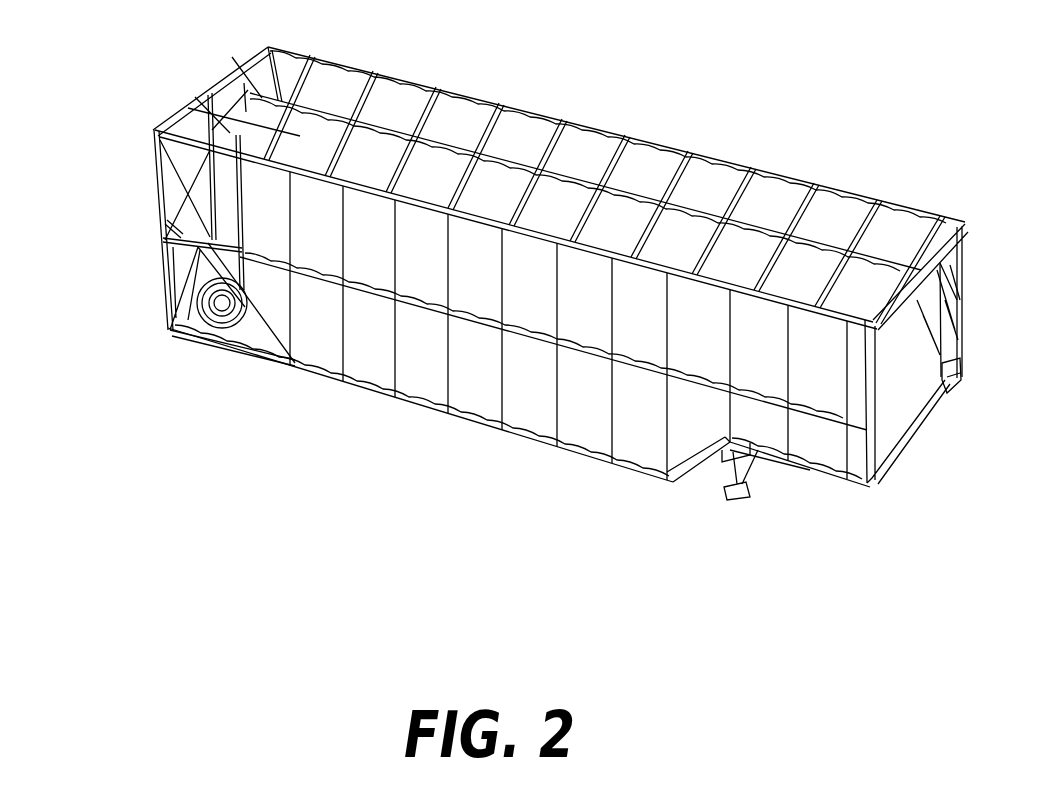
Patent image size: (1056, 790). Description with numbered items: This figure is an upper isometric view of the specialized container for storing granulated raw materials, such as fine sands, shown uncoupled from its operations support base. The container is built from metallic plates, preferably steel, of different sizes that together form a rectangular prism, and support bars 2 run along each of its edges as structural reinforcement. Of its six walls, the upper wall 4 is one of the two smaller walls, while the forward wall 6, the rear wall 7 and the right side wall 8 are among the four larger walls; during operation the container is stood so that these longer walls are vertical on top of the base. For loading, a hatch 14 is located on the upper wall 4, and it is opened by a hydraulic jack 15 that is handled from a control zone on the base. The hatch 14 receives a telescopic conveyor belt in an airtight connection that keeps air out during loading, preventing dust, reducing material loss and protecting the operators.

The support bars 2 is at (158, 190).
The upper wall 4 is at (907, 383).
The forward wall 6 is at (612, 213).
The rear wall 7 is at (580, 455).
The right side wall 8 is at (468, 345).
The hatch 14 is at (966, 348).
The hydraulic jack 15 is at (962, 268).